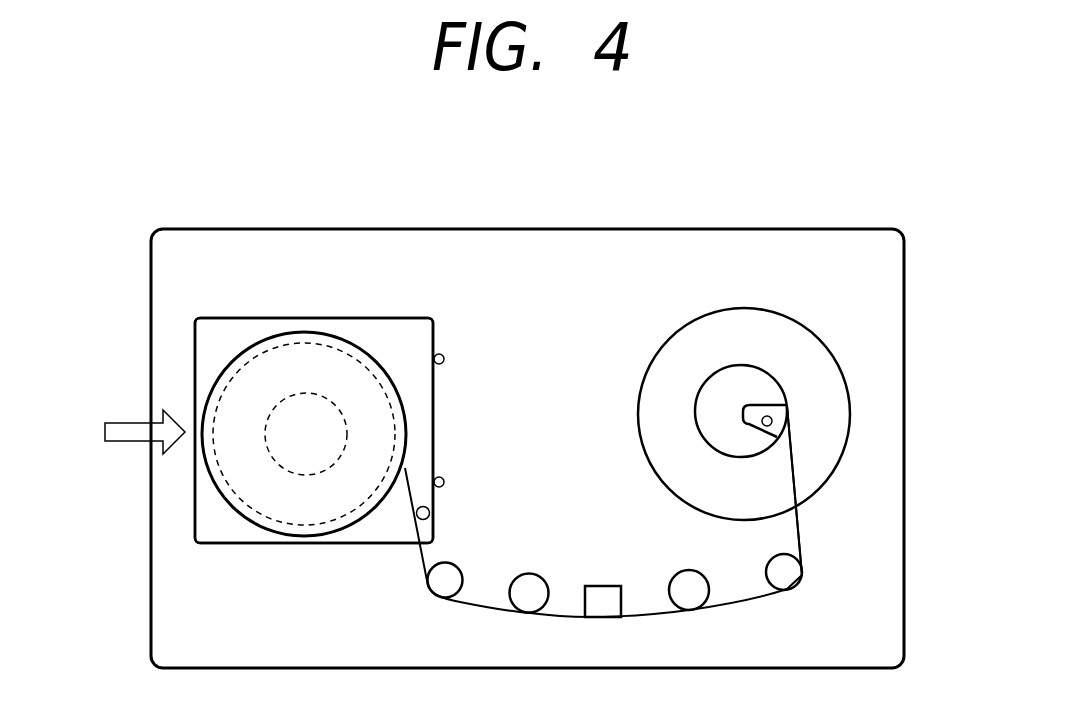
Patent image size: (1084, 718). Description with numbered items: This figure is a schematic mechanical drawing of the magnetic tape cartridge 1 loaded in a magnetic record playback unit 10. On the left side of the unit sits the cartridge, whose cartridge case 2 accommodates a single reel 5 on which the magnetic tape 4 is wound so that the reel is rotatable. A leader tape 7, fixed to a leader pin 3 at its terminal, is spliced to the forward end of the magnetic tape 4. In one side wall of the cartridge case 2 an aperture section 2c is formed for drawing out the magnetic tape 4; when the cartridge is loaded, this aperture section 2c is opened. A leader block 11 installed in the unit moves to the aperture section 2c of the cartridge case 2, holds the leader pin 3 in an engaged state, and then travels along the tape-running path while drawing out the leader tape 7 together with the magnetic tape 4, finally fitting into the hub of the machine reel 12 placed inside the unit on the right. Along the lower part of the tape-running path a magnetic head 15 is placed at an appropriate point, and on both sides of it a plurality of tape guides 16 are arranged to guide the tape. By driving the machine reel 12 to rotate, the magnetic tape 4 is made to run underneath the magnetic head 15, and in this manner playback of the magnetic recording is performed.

The magnetic record playback unit 10 is at (577, 226).
The magnetic tape cartridge 1 is at (229, 300).
The cartridge case 2 is at (400, 325).
The reel 5 is at (400, 383).
The magnetic tape 4 is at (408, 477).
The aperture section 2c is at (407, 547).
The tape guides 16 is at (526, 582).
The magnetic head 15 is at (606, 588).
The machine reel 12 is at (768, 328).
The leader pin 3 is at (767, 426).
The leader block 11 is at (775, 407).
The leader tape 7 is at (802, 528).